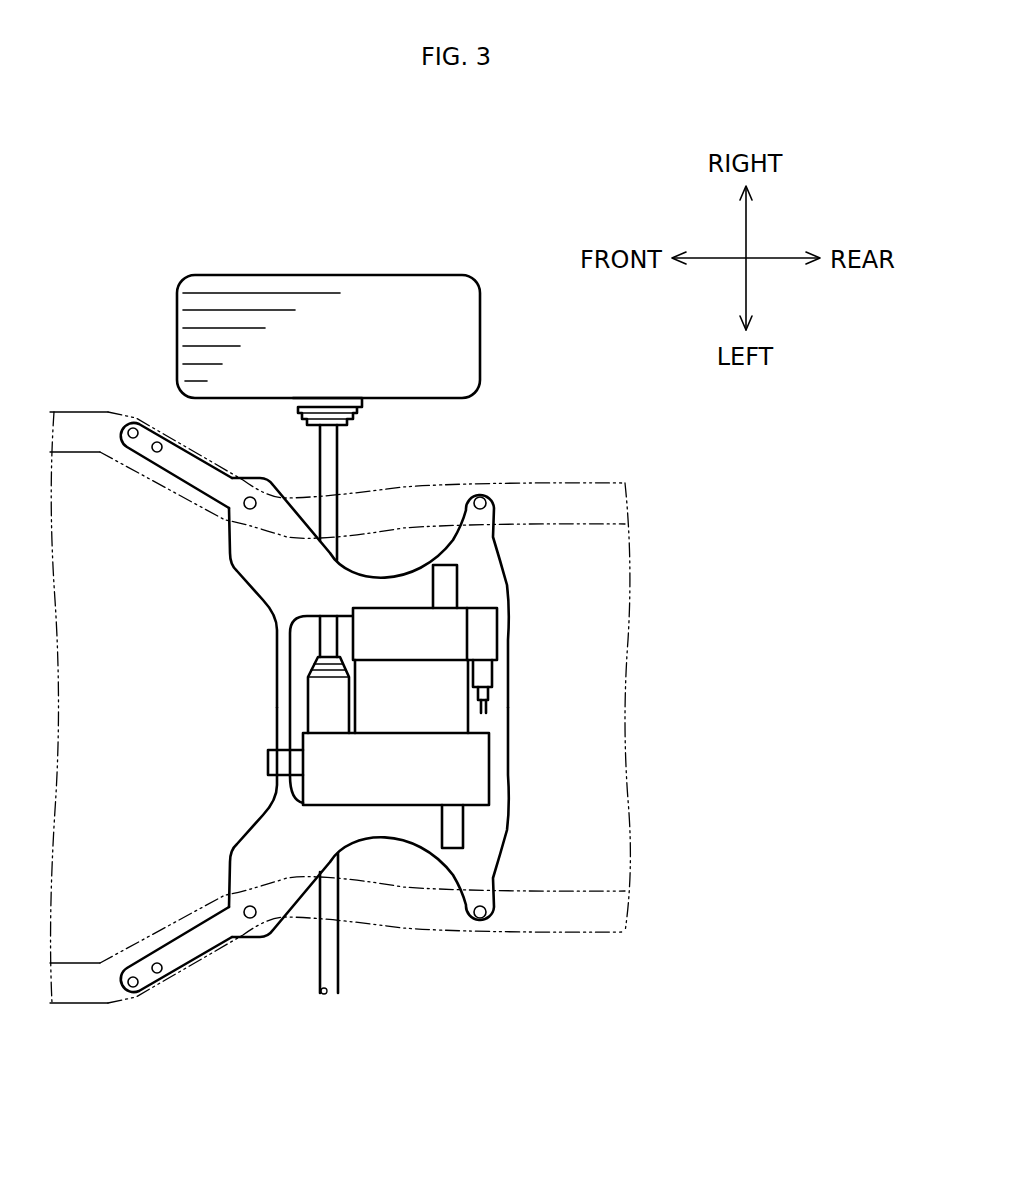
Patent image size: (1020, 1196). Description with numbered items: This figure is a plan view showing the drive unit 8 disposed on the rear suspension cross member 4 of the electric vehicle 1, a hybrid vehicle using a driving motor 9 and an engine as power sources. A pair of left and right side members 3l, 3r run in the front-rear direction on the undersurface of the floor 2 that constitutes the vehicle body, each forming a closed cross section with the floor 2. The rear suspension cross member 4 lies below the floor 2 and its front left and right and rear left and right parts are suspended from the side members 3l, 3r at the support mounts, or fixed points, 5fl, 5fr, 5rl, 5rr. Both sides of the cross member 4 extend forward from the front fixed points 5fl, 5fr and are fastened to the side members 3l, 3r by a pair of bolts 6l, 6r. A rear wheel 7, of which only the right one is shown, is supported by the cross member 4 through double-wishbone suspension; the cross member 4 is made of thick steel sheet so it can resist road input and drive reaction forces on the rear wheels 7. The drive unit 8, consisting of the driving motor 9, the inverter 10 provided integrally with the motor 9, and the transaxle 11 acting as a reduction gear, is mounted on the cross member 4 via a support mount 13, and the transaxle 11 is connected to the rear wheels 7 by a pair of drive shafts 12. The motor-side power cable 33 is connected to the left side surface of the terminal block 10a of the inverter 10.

The electric vehicle 1 is at (552, 385).
The floor 2 is at (626, 553).
The right side member 3r is at (590, 483).
The left side member 3l is at (590, 932).
The rear suspension cross member 4 is at (502, 589).
The front right support mount 5fr is at (251, 497).
The rear right support mount 5rr is at (480, 497).
The front left support mount 5fl is at (251, 918).
The rear left support mount 5rl is at (480, 918).
The right bolt 6r is at (157, 442).
The left bolt 6l is at (157, 973).
The rear wheel 7 is at (407, 302).
The drive unit 8 is at (513, 704).
The driving motor 9 is at (445, 720).
The inverter 10 is at (450, 648).
The terminal block 10a is at (487, 625).
The transaxle 11 is at (465, 775).
The drive shaft 12 is at (340, 456).
The support mount 13 is at (457, 577).
The motor-side power cable 33 is at (485, 707).